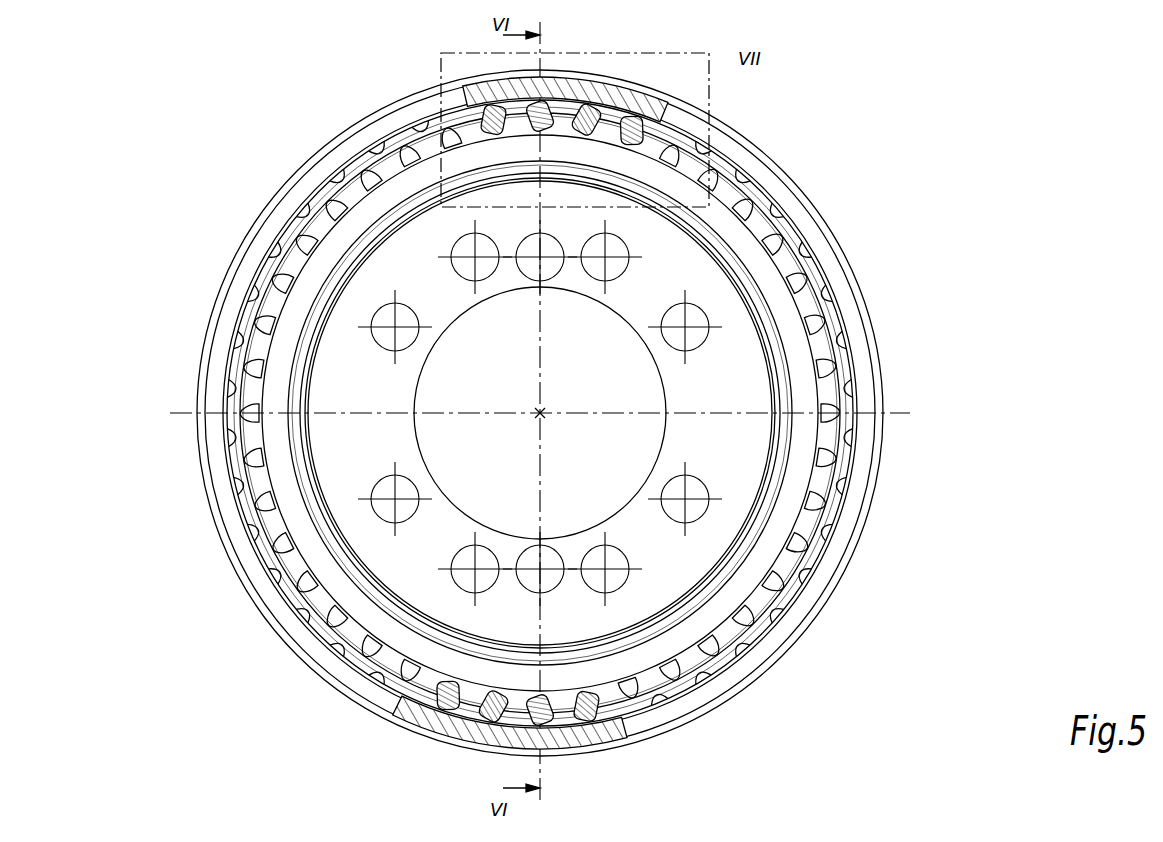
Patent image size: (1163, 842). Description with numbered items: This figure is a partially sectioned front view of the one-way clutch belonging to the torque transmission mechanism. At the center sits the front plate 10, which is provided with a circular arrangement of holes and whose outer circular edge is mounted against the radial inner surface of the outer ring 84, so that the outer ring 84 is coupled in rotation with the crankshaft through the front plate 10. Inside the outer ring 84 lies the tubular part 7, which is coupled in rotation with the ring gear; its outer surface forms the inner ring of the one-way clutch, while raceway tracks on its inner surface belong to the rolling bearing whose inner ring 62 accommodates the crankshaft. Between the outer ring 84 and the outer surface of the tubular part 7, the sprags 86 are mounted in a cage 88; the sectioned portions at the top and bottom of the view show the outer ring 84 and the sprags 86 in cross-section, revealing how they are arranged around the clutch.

The tubular part 7 is at (752, 250).
The front plate 10 is at (747, 370).
The inner ring 62 is at (728, 560).
The outer ring 84 is at (262, 243).
The sprags 86 is at (352, 160).
The cage 88 is at (813, 278).